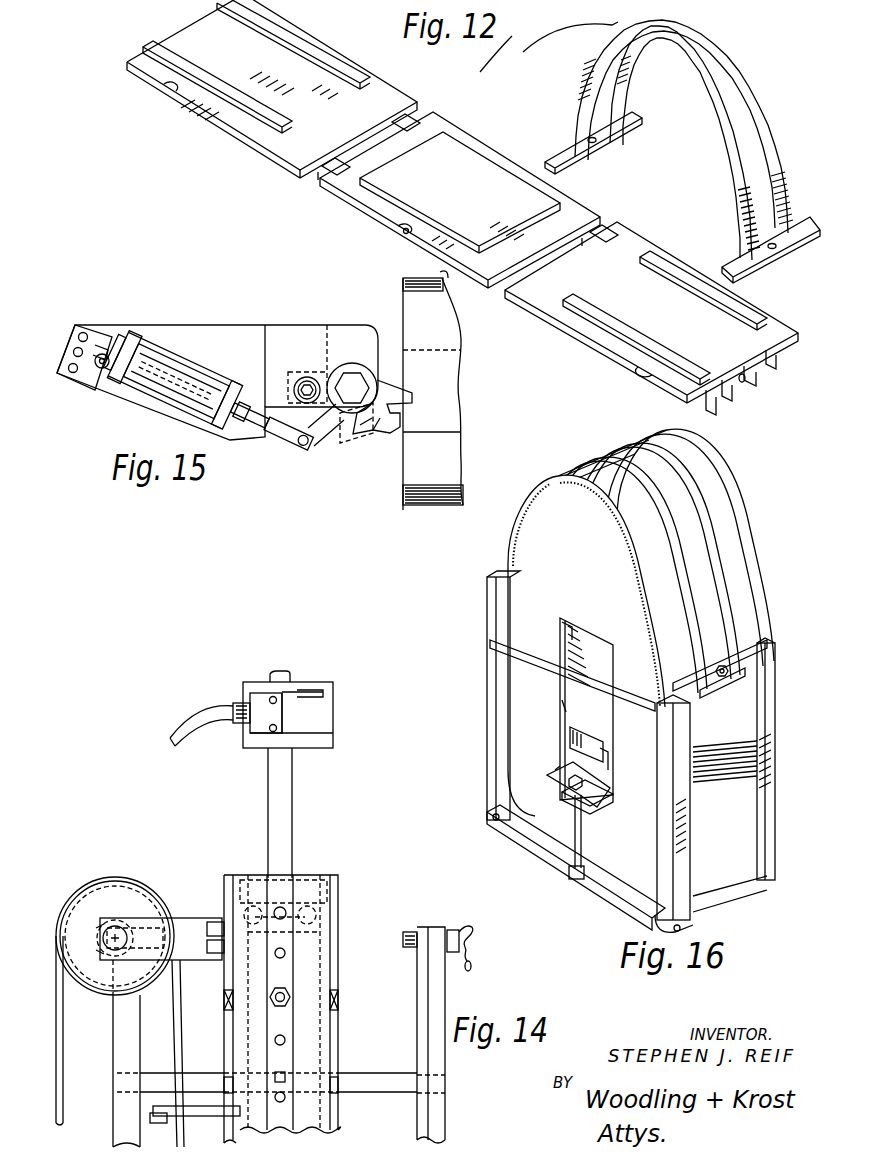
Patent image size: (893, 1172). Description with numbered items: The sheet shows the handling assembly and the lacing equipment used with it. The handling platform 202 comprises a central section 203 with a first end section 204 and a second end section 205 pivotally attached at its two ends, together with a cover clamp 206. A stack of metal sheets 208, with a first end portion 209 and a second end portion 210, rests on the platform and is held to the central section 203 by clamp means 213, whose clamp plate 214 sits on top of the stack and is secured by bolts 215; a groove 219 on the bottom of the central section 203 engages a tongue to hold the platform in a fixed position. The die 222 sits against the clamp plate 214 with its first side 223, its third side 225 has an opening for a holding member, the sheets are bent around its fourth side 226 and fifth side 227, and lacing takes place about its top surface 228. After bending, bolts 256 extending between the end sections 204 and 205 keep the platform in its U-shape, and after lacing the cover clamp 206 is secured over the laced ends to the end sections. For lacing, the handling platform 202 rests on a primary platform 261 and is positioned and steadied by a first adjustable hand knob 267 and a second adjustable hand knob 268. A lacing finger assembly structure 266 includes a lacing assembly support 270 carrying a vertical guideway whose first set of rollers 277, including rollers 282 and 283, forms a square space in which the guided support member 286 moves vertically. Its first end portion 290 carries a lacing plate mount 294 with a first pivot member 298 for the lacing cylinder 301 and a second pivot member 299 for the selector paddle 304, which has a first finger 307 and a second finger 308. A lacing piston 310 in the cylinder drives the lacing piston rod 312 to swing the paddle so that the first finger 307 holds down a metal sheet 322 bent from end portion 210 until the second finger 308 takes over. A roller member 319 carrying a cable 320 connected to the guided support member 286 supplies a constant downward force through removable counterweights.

In FIG. 12, the handling platform 202 is at (432, 200).
In FIG. 12, the central section 203 is at (372, 216).
In FIG. 16, the central section 203 is at (613, 897).
In FIG. 12, the first end section 204 is at (603, 356).
In FIG. 12, the second end section 205 is at (186, 110).
In FIG. 12, the cover clamp 206 is at (622, 62).
In FIG. 16, the cover clamp 206 is at (724, 584).
In FIG. 16, the stack of metal sheets 208 is at (538, 812).
In FIG. 15, the first end portion 209 is at (438, 508).
In FIG. 15, the second end portion 210 is at (403, 277).
In FIG. 16, the clamp means 213 is at (585, 772).
In FIG. 16, the clamp plate 214 is at (600, 803).
In FIG. 16, the bolts 215 is at (572, 838).
In FIG. 12, the groove 219 is at (407, 238).
In FIG. 16, the die 222 is at (584, 695).
In FIG. 16, the first side 223 is at (570, 762).
In FIG. 16, the third side 225 is at (603, 737).
In FIG. 16, the fourth side 226 is at (606, 765).
In FIG. 16, the fifth side 227 is at (565, 712).
In FIG. 16, the top surface 228 is at (576, 625).
In FIG. 16, the bolts 256 is at (527, 660).
In FIG. 14, the primary platform 261 is at (397, 1088).
In FIG. 14, the first lacing finger assembly structure 266 is at (284, 813).
In FIG. 14, the first adjustable hand knob 267 is at (470, 956).
In FIG. 14, the second adjustable hand knob 268 is at (90, 915).
In FIG. 14, the lacing assembly support 270 is at (334, 1040).
In FIG. 14, the first set of vertically spaced rollers 277 is at (317, 928).
In FIG. 14, the roller 282 is at (223, 913).
In FIG. 14, the roller 283 is at (322, 920).
In FIG. 14, the guided support member 286 is at (285, 812).
In FIG. 14, the first end portion 290 is at (290, 768).
In FIG. 15, the lacing plate mount 294 is at (253, 328).
In FIG. 14, the lacing plate mount 294 is at (328, 740).
In FIG. 15, the first pivot member 298 is at (104, 343).
In FIG. 15, the second pivot member 299 is at (352, 372).
In FIG. 15, the lacing cylinder 301 is at (198, 366).
In FIG. 15, the selector paddle 304 is at (356, 442).
In FIG. 15, the first finger 307 is at (399, 383).
In FIG. 15, the second finger 308 is at (386, 434).
In FIG. 15, the lacing piston 310 is at (160, 350).
In FIG. 15, the lacing piston rod 312 is at (209, 385).
In FIG. 14, the roller member 319 is at (125, 890).
In FIG. 14, the cable 320 is at (174, 1014).
In FIG. 15, the metal sheet 322 is at (444, 380).